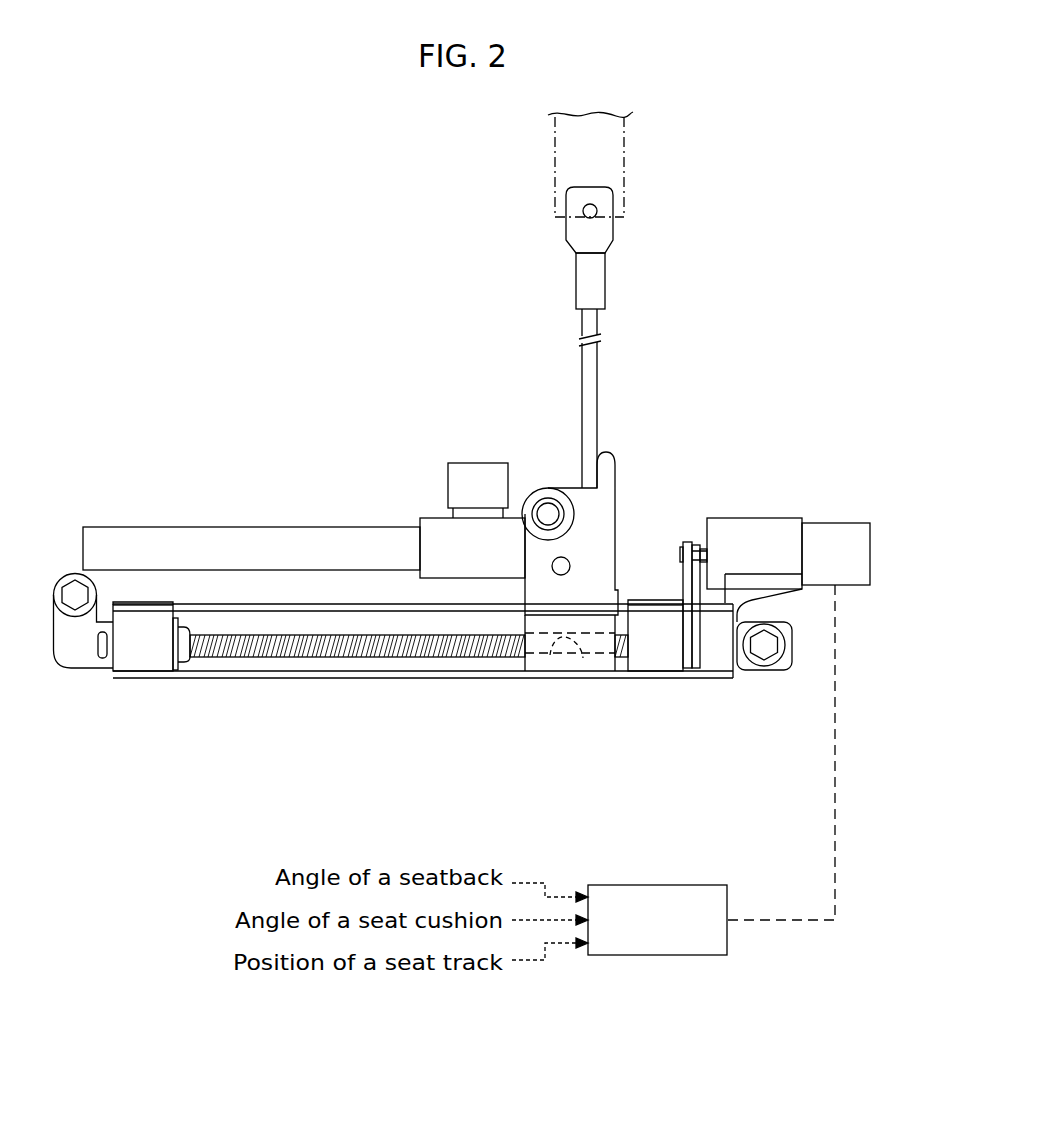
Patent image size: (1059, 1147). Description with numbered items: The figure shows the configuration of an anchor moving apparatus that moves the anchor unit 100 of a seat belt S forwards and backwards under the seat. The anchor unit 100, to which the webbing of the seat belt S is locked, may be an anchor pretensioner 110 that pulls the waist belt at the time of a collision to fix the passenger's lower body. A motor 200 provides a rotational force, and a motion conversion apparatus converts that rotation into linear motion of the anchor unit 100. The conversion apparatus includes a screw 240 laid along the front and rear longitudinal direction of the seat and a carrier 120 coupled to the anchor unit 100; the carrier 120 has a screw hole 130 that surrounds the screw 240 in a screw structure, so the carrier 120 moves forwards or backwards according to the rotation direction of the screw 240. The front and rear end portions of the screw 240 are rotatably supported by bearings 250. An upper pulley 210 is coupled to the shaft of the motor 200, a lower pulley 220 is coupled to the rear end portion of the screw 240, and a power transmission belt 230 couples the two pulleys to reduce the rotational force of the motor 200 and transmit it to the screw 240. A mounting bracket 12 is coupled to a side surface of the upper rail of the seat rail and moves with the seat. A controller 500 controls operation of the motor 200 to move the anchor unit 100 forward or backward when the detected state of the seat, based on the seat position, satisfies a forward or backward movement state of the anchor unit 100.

The seat belt S is at (626, 157).
The anchor unit 100 is at (540, 476).
The anchor pretensioner 110 is at (598, 372).
The carrier 120 is at (598, 505).
The screw hole 130 is at (580, 660).
The motor 200 is at (762, 528).
The upper pulley 210 is at (693, 544).
The lower pulley 220 is at (697, 668).
The power transmission belt 230 is at (690, 580).
The screw 240 is at (371, 655).
The bearing 250 is at (143, 650).
The mounting bracket 12 is at (225, 675).
The controller 500 is at (657, 955).